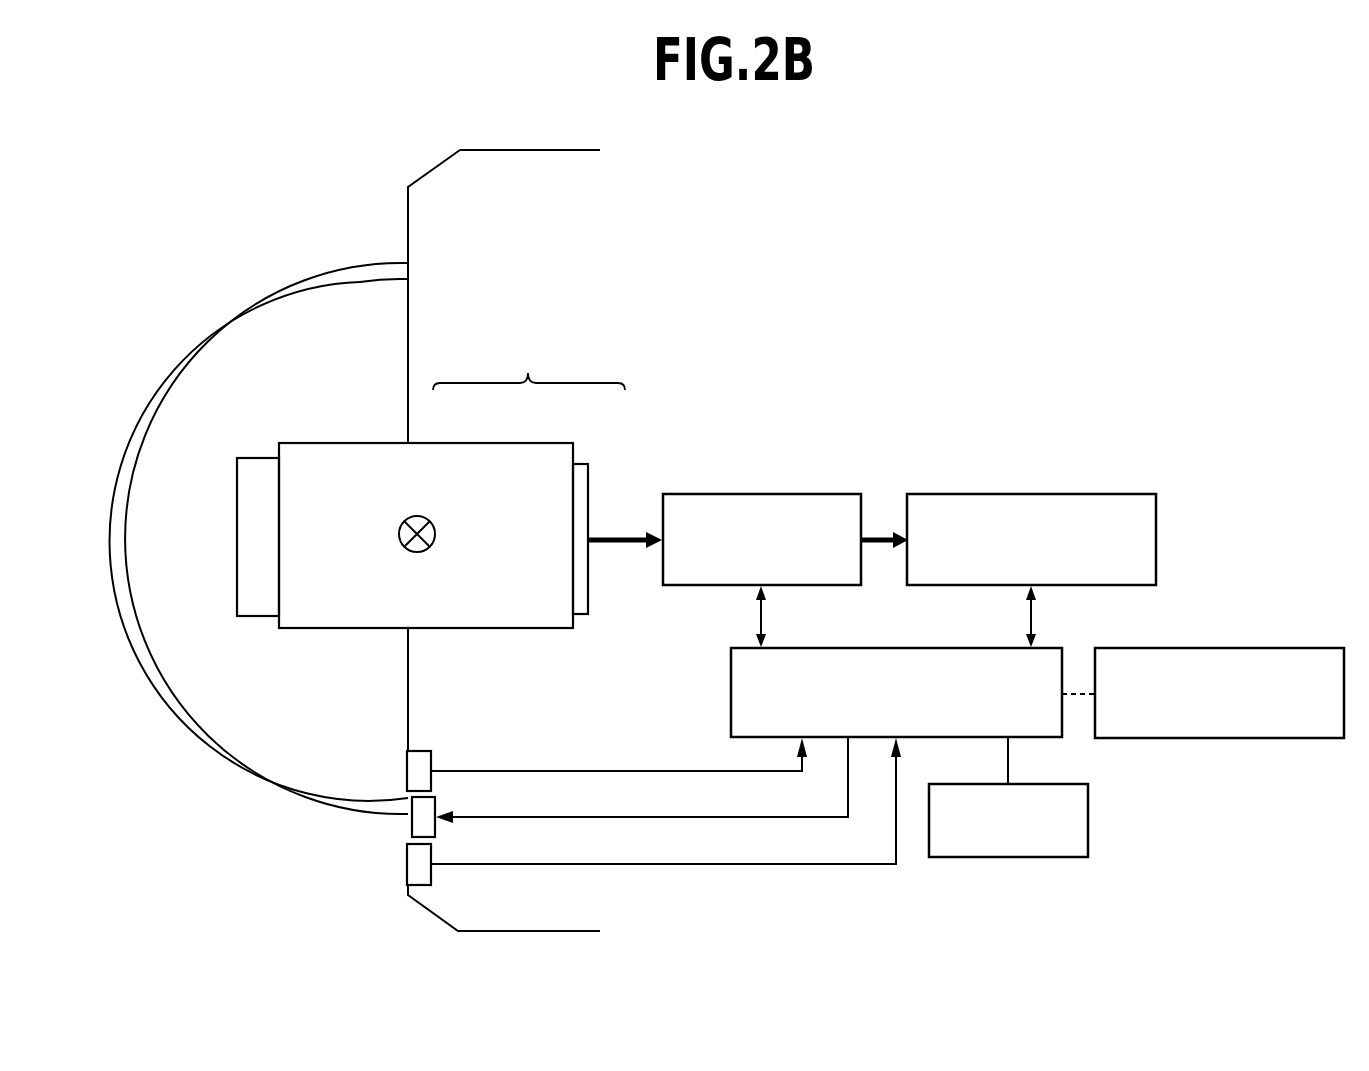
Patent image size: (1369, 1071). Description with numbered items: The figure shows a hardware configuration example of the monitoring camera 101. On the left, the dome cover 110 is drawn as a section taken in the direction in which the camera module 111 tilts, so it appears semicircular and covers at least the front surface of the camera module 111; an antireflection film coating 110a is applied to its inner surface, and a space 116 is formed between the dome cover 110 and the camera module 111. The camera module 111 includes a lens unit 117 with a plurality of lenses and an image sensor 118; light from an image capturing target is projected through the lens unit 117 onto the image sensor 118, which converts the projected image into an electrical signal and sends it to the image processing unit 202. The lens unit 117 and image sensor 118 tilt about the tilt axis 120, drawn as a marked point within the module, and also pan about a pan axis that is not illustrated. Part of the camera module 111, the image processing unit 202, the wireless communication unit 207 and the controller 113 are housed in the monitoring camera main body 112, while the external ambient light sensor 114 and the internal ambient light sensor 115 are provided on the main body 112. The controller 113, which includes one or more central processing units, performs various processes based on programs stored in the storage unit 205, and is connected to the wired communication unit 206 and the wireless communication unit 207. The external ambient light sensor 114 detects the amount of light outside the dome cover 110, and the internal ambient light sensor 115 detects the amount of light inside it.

The monitoring camera 101 is at (282, 166).
The monitoring camera main body 112 is at (533, 150).
The dome cover 110 is at (218, 747).
The antireflection film coating 110a is at (378, 281).
The space 116 is at (366, 357).
The camera module 111 is at (529, 365).
The lens unit 117 is at (462, 443).
The image sensor 118 is at (580, 464).
The tilt axis 120 is at (417, 516).
The image processing unit 202 is at (762, 494).
The wireless communication unit 207 is at (1031, 494).
The controller 113 is at (905, 648).
The wired communication unit 206 is at (1220, 648).
The storage unit 205 is at (1010, 858).
The internal ambient light sensor 115 is at (415, 751).
The external ambient light sensor 114 is at (407, 866).